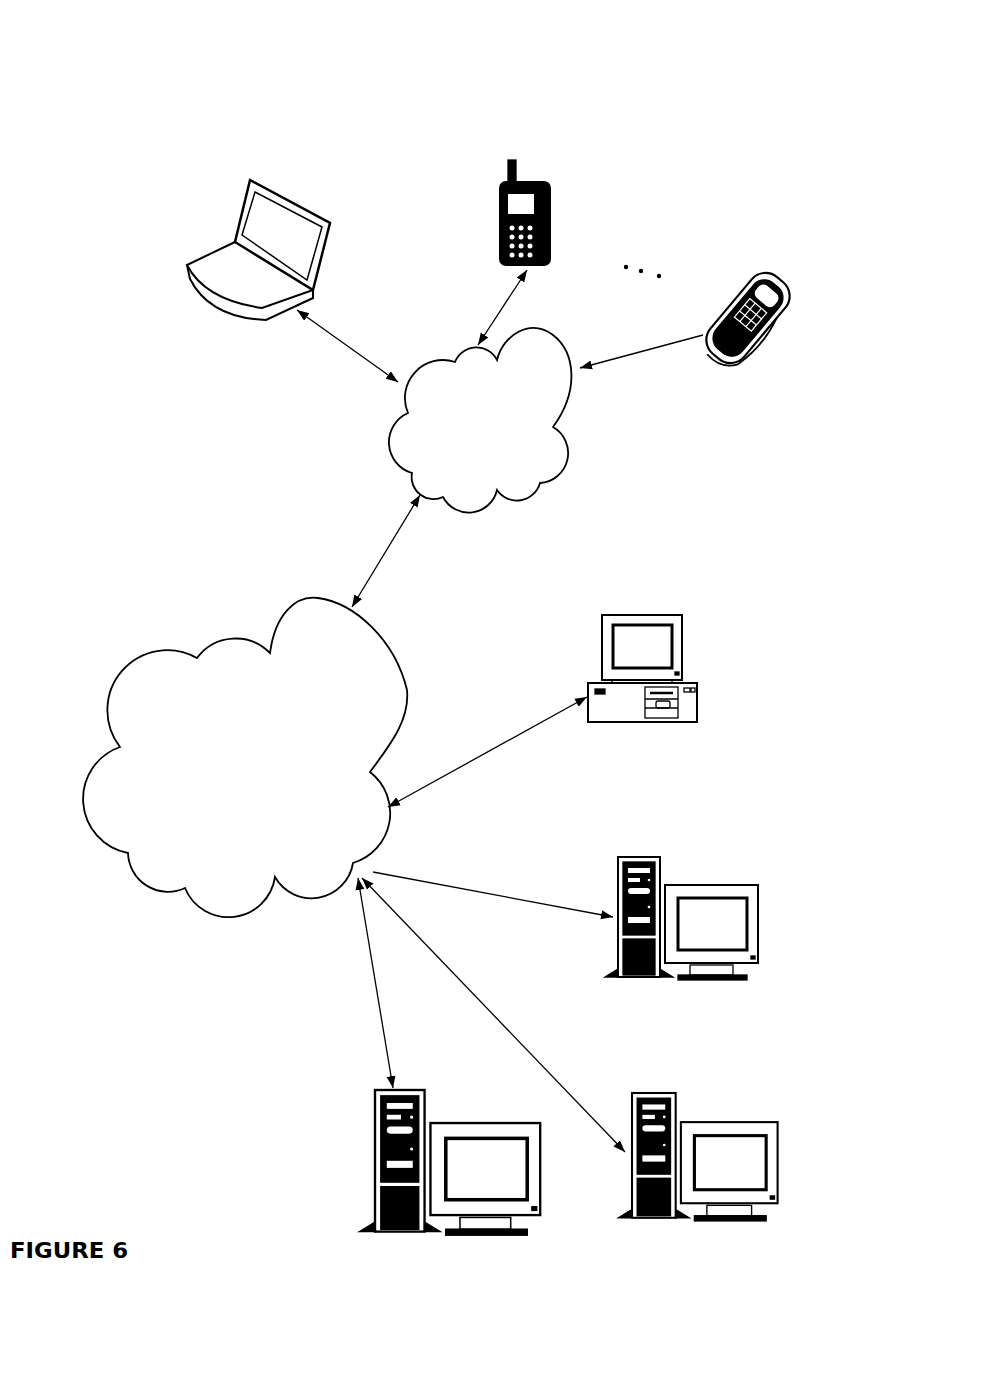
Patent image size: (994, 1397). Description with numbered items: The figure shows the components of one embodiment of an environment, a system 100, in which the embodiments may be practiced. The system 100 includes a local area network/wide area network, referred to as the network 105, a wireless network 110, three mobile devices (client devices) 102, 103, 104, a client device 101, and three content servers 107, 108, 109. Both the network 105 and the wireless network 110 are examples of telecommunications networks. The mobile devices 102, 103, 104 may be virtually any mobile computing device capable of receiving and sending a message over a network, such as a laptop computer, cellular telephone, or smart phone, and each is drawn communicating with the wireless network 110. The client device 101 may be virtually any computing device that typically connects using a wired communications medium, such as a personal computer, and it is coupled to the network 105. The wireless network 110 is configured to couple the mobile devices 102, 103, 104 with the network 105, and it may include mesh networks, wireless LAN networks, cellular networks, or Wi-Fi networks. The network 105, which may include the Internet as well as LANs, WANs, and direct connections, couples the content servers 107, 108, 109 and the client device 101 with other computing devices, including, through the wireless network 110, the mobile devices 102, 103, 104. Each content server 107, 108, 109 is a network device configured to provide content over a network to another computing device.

The system 100 is at (205, 35).
The client device 101 is at (698, 695).
The mobile device (client device) 102 is at (321, 250).
The mobile device (client device) 103 is at (559, 205).
The mobile device (client device) 104 is at (797, 302).
The local area networks/wide area networks (network) 105 is at (408, 677).
The content server 107 is at (540, 1165).
The content server 108 is at (775, 1160).
The content server 109 is at (760, 922).
The wireless network 110 is at (568, 468).